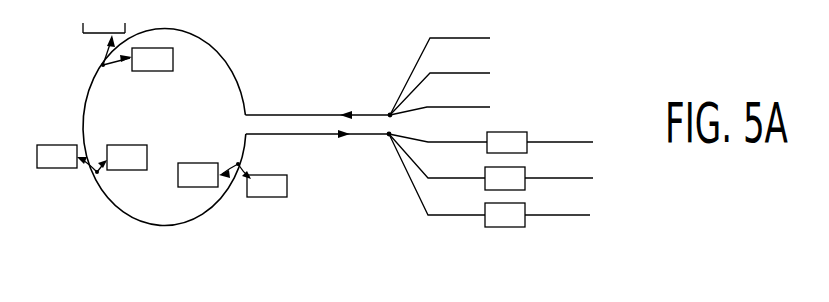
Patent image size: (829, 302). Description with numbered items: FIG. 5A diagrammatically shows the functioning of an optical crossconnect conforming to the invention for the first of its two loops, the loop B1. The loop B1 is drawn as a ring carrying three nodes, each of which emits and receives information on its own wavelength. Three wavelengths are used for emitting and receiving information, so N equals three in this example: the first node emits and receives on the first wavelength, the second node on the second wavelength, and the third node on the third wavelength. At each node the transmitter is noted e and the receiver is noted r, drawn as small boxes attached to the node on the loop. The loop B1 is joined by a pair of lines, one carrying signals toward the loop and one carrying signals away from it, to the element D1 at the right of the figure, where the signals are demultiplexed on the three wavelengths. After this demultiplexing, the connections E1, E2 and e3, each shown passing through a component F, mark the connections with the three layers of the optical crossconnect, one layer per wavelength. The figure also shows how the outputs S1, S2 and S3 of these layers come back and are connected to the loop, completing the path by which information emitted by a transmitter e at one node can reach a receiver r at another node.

The loop B1 is at (117, 244).
The coupler / distributor D1 is at (381, 180).
The output S1 is at (451, 107).
The output S2 is at (452, 89).
The output S3 is at (452, 72).
The connection E1 is at (504, 143).
The connection E2 is at (504, 161).
The connection e3 is at (502, 179).
The optical filter F is at (517, 132).
The transmitter e is at (157, 71).
The receiver r is at (55, 145).